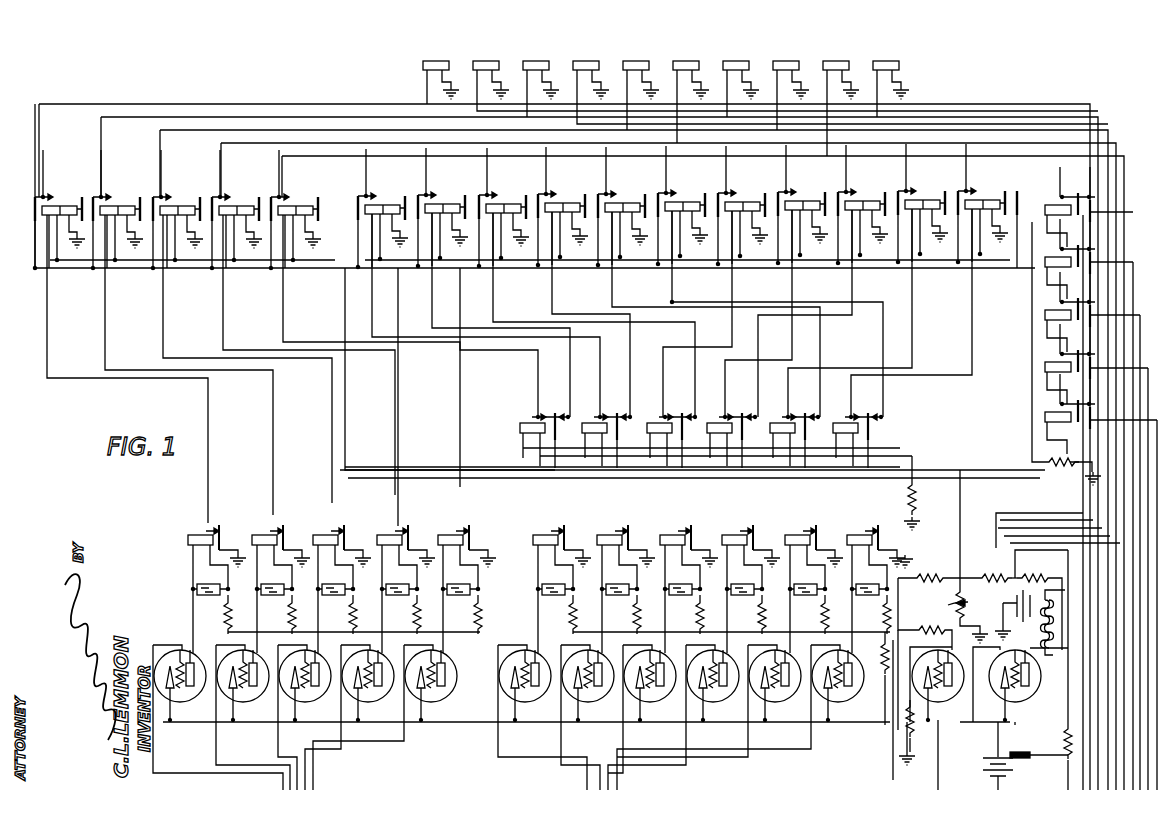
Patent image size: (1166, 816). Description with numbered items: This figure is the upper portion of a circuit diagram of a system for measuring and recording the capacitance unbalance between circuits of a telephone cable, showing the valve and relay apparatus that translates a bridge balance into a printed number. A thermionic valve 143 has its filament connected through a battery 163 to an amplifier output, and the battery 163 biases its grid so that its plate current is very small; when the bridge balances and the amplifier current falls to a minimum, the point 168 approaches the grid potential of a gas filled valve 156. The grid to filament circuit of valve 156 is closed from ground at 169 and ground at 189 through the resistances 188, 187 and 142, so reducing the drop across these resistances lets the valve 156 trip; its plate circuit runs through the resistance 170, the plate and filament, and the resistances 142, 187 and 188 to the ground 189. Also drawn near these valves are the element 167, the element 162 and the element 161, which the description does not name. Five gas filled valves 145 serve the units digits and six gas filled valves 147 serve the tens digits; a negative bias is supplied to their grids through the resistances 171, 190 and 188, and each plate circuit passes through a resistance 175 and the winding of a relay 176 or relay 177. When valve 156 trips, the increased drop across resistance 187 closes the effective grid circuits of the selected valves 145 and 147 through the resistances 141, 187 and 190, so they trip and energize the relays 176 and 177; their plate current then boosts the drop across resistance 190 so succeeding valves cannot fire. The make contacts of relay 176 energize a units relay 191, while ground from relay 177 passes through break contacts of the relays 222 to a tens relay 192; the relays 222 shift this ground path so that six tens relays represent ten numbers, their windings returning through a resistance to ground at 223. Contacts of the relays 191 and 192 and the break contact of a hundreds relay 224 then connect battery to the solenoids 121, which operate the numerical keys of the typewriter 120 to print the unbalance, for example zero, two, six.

The typewriter 120 is at (450, 50).
The solenoids 121 is at (480, 64).
The units relays 191 is at (288, 192).
The tens relays 192 is at (840, 193).
The hundreds relay 224 is at (1050, 208).
The path shifting relays 222 is at (545, 422).
The ground 223 is at (918, 497).
The units relay 176 is at (460, 527).
The tens relay 177 is at (545, 530).
The resistance 175 is at (450, 609).
The gas filled thermionic valves 145 is at (450, 703).
The gas filled thermionic valves 147 is at (845, 700).
The resistance 171 is at (880, 685).
The resistance 190 is at (920, 574).
The resistance 187 is at (993, 576).
The resistance 142 is at (1051, 577).
The ground 189 is at (980, 621).
The resistance 188 is at (963, 603).
The resistance 170 is at (933, 630).
The transformer 167 is at (1038, 609).
The thermionic valve 156 is at (970, 685).
The tube 162 is at (1058, 680).
The point 168 is at (980, 725).
The resistor 161 is at (920, 742).
The ground 169 is at (910, 768).
The thermionic valve 143 is at (1015, 752).
The battery 163 is at (1006, 780).
The resistance 141 is at (1068, 758).